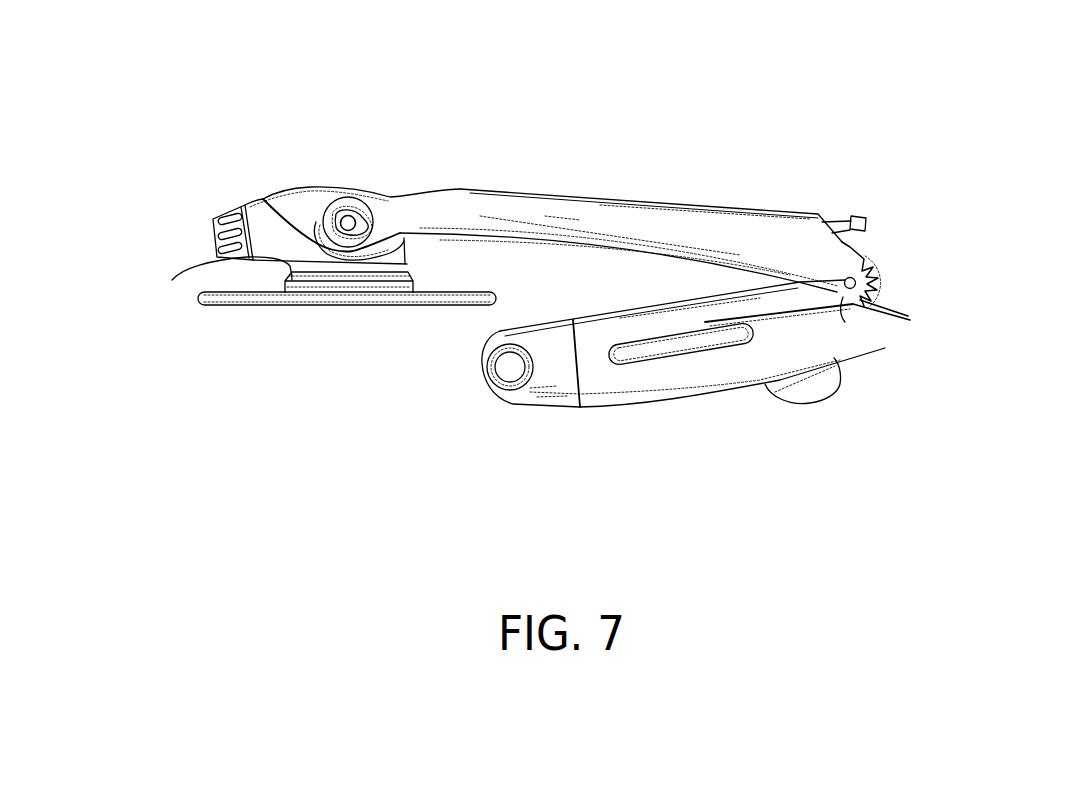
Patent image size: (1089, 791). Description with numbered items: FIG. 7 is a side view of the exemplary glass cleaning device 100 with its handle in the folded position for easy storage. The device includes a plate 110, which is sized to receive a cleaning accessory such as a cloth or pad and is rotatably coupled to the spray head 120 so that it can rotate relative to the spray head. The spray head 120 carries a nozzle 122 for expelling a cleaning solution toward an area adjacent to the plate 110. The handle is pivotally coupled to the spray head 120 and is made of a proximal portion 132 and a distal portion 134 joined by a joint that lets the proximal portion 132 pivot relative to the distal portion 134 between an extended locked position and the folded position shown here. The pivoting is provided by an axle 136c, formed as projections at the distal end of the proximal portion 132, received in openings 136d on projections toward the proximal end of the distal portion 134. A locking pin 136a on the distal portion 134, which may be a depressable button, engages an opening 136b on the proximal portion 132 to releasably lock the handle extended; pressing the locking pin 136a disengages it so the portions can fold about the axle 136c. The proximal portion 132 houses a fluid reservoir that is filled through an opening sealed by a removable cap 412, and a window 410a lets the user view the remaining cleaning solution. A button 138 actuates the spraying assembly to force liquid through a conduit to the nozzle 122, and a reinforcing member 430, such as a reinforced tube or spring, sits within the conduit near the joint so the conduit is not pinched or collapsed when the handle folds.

The glass cleaning device 100 is at (333, 33).
The plate 110 is at (223, 306).
The spray head 120 is at (310, 202).
The nozzle 122 is at (172, 280).
The distal portion 134 is at (547, 200).
The locking pin 136a is at (865, 215).
The reinforcing member 430 is at (878, 278).
The opening 136b is at (912, 319).
The axle 136c is at (856, 308).
The openings 136d is at (849, 291).
The proximal portion 132 is at (612, 415).
The cap 412 is at (485, 388).
The window 410a is at (653, 358).
The button 138 is at (783, 403).